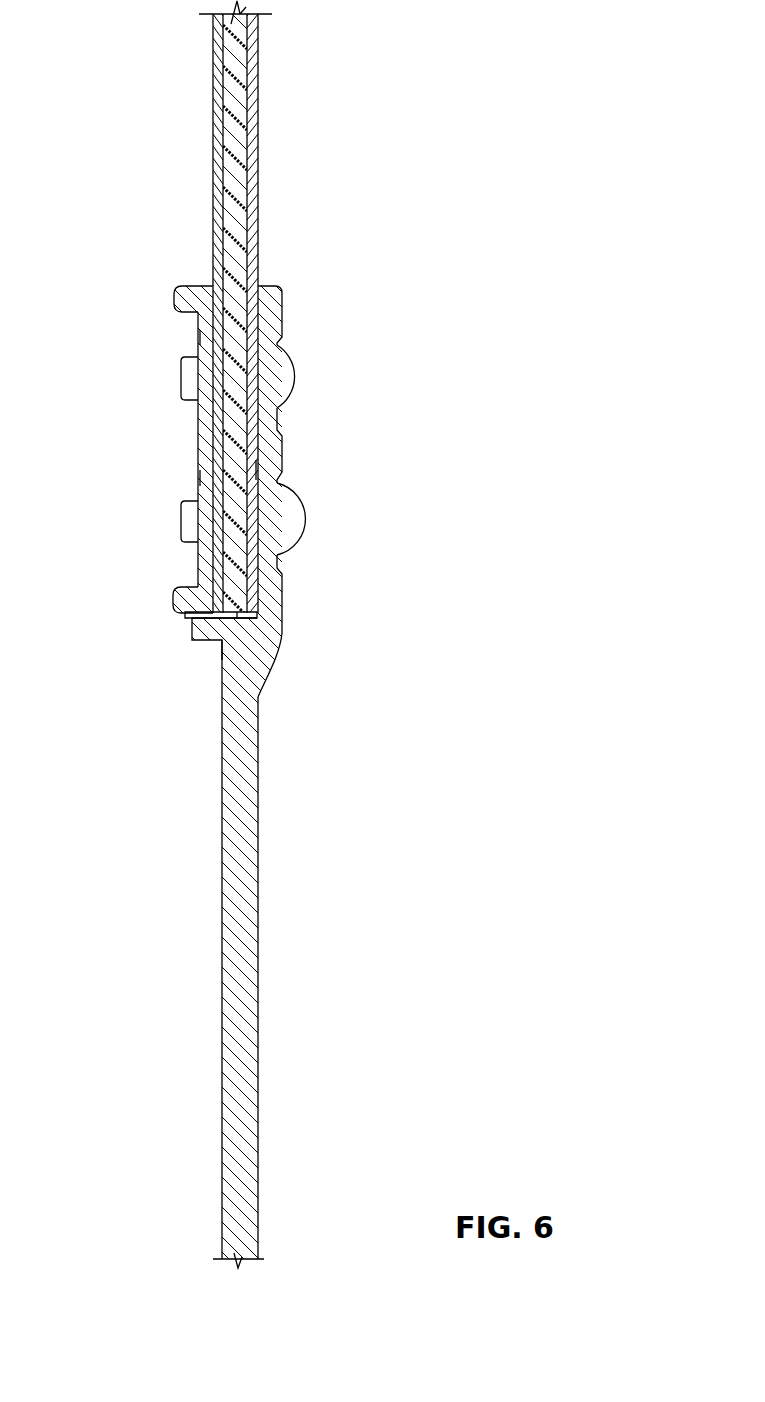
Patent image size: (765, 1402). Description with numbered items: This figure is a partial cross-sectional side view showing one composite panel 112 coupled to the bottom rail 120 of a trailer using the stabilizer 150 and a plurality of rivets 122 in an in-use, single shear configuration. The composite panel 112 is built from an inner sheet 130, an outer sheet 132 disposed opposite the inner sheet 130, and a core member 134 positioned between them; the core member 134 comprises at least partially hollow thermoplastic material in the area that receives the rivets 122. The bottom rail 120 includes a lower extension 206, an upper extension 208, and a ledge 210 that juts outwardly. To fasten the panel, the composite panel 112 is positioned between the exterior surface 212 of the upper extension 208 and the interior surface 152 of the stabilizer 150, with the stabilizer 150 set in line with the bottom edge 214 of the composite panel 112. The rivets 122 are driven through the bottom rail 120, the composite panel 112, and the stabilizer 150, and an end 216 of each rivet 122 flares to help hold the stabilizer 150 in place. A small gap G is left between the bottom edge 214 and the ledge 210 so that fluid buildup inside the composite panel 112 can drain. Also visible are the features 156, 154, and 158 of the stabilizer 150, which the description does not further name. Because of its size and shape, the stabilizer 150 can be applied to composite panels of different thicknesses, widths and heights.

The composite panel 112 is at (281, 138).
The inner sheet 130 is at (258, 212).
The outer sheet 132 is at (212, 193).
The core member 134 is at (236, 97).
The lower extension 206 is at (245, 833).
The bottom rail 120 is at (240, 987).
The upper extension 208 is at (283, 313).
The rivets 122 is at (290, 378).
The upper flange 156 is at (178, 306).
The stabilizer 150 is at (197, 433).
The interior surface 152 is at (203, 337).
The sleeve outer surface 154 is at (197, 478).
The exterior surface 212 is at (258, 470).
The end 216 is at (187, 378).
The lower flange 158 is at (188, 598).
The gap G is at (181, 615).
The ledge 210 is at (205, 638).
The bottom edge 214 is at (240, 620).